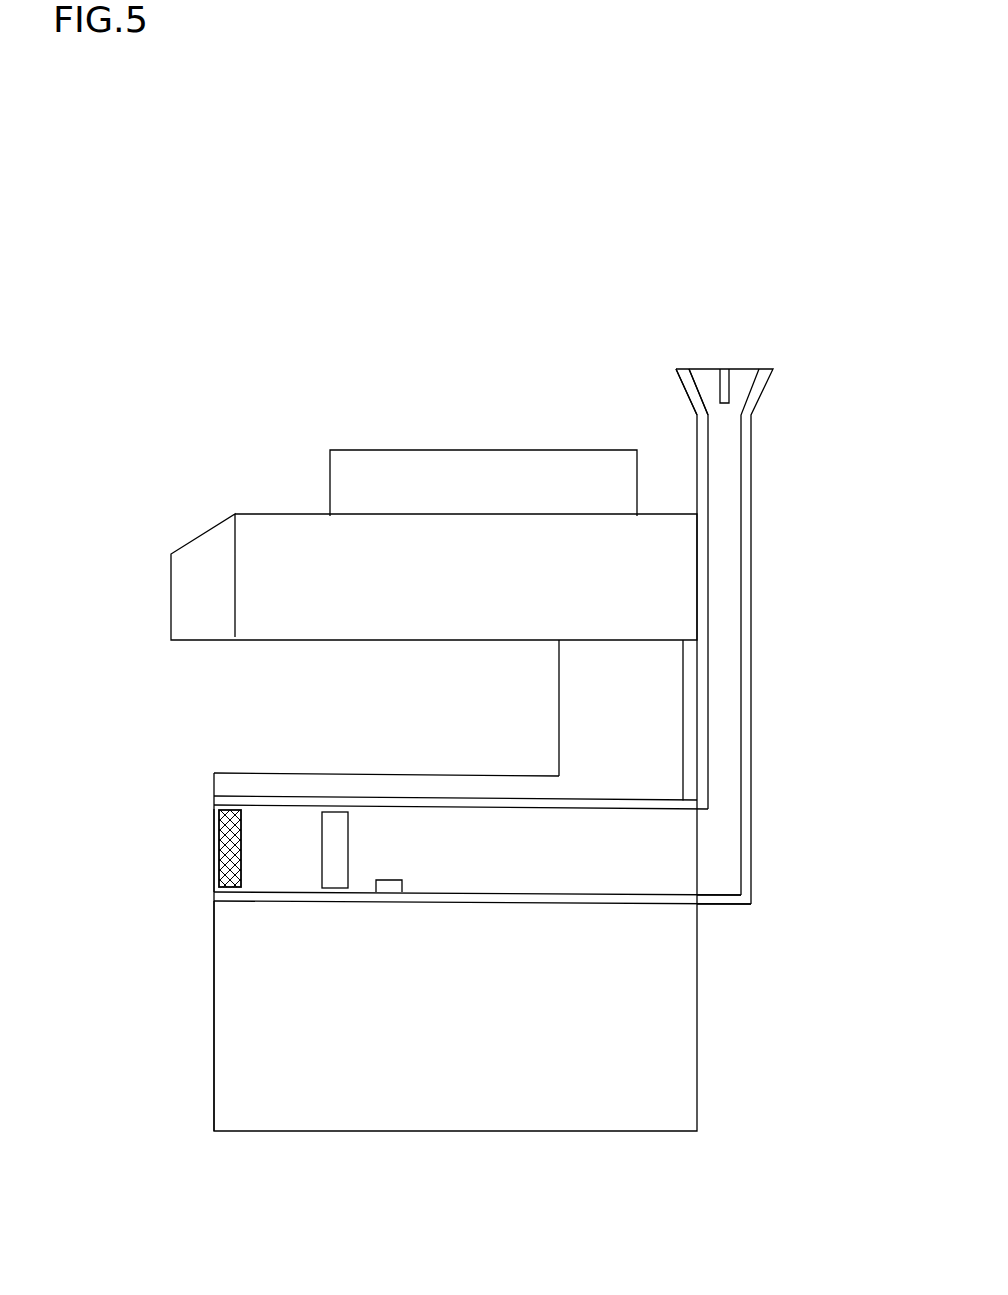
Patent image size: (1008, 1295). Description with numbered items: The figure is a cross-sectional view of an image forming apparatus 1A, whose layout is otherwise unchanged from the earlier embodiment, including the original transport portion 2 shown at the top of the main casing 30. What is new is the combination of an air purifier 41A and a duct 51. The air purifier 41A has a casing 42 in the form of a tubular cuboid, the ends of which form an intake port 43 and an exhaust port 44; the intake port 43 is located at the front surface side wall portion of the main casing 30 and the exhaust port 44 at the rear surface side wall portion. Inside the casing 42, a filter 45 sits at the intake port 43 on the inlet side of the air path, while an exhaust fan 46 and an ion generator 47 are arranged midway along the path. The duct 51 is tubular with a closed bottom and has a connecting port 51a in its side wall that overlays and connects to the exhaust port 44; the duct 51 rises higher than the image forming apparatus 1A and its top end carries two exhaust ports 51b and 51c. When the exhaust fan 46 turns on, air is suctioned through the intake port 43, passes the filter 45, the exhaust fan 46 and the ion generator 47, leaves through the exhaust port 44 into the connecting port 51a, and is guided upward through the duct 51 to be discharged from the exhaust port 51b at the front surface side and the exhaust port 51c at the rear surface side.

The image forming apparatus 1A is at (437, 329).
The original transport portion 2 is at (326, 481).
The main casing 30 is at (214, 1085).
The air purifier 41A is at (303, 903).
The casing 42 is at (498, 905).
The intake port 43 is at (213, 892).
The exhaust port 44 is at (697, 895).
The filter 45 is at (227, 843).
The exhaust fan 46 is at (337, 817).
The ion generator 47 is at (390, 892).
The duct 51 is at (747, 667).
The connecting port 51a is at (697, 895).
The exhaust port 51b is at (708, 378).
The exhaust port 51c is at (740, 378).